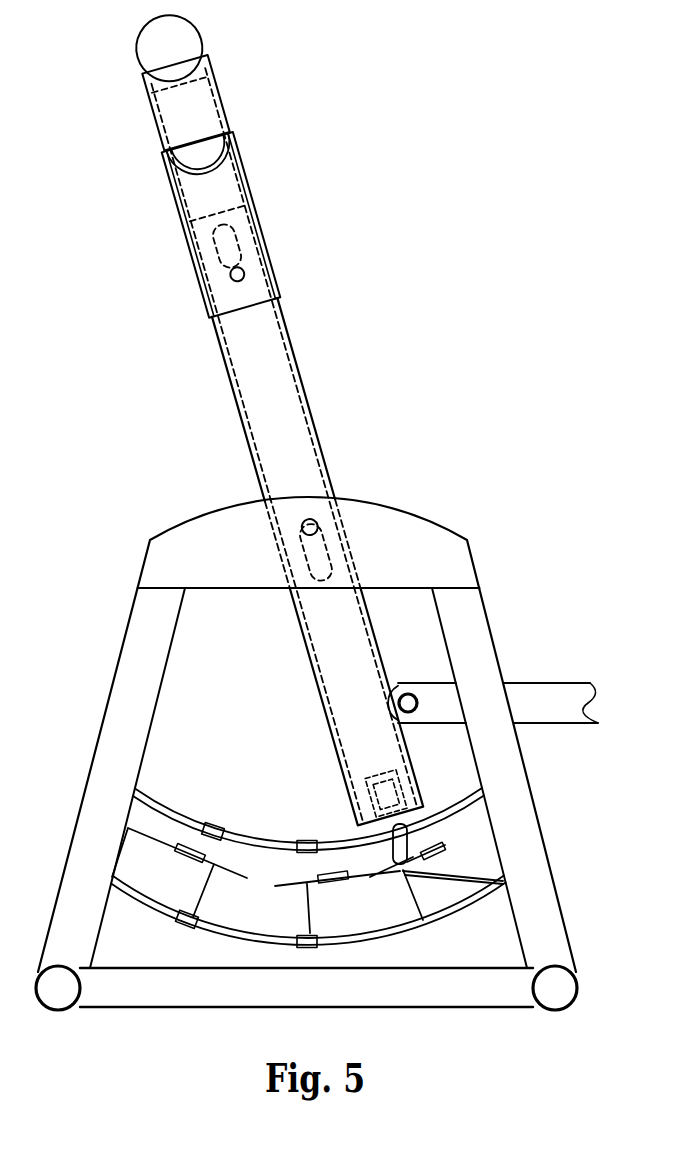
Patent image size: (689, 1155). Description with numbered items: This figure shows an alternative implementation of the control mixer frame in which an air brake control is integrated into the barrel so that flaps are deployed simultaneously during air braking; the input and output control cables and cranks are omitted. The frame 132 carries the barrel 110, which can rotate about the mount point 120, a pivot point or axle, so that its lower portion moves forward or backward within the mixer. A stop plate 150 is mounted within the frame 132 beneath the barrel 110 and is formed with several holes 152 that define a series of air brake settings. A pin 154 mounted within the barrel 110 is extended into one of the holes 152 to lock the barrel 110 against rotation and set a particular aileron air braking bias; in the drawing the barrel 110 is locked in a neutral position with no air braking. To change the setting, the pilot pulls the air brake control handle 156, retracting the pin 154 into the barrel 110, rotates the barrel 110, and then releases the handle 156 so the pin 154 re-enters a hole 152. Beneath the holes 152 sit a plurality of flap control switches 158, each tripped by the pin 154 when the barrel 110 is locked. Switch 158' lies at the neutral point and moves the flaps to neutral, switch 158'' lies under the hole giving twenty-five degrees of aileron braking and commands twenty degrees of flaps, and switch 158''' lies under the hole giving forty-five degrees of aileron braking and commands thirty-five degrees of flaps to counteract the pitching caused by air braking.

The barrel 110 is at (311, 413).
The mount point 120 is at (318, 524).
The frame 132 is at (475, 623).
The stop plate 150 is at (153, 795).
The holes 152 is at (213, 825).
The pin 154 is at (413, 835).
The air brake control handle 156 is at (232, 137).
The flap control switches 158 is at (363, 899).
The switch 158' is at (453, 897).
The switch 158'' is at (349, 914).
The switch 158''' is at (179, 895).